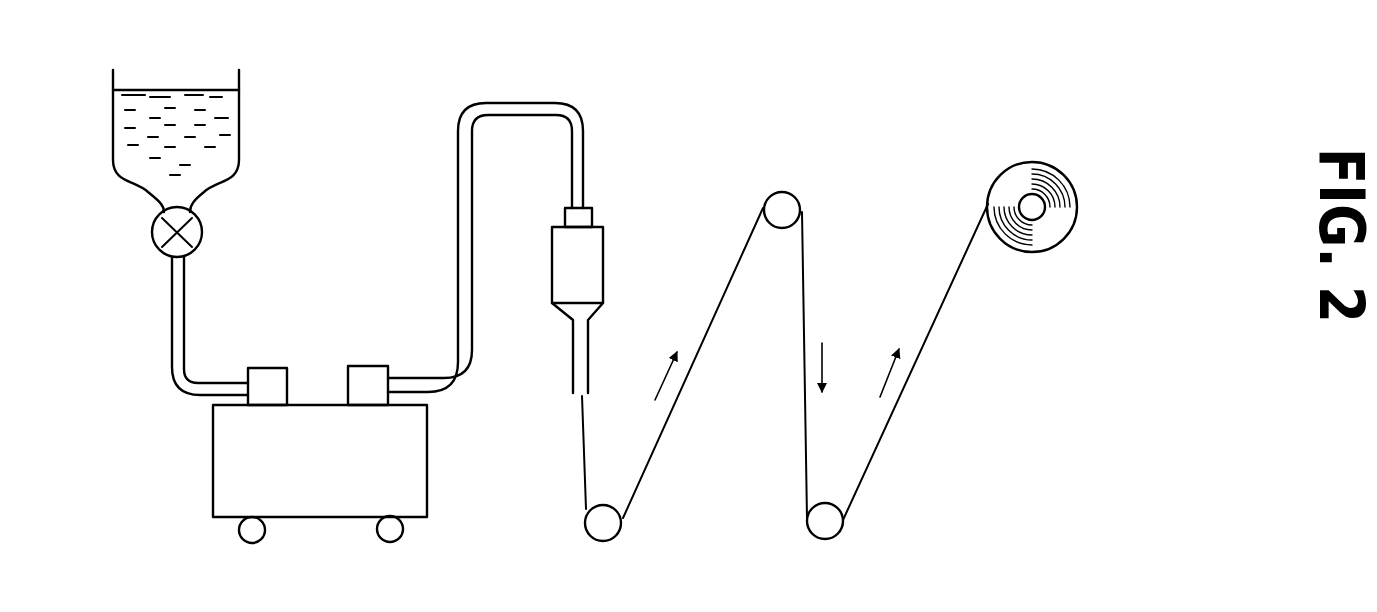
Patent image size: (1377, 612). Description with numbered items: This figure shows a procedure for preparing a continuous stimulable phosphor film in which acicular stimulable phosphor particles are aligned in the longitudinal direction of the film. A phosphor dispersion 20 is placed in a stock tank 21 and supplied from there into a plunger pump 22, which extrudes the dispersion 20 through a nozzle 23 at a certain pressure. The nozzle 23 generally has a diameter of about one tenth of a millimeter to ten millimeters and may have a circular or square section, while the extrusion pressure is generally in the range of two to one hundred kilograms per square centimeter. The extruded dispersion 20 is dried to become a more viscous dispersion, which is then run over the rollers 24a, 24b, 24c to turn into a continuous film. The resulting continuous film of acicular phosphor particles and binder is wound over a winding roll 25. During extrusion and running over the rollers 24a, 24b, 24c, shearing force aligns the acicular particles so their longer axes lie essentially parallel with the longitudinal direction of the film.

The phosphor dispersion 20 is at (178, 108).
The stock tank 21 is at (112, 124).
The plunger pump 22 is at (213, 466).
The nozzle 23 is at (566, 355).
The roller 24a is at (595, 532).
The roller 24b is at (796, 210).
The roller 24c is at (816, 530).
The winding roll 25 is at (1065, 216).